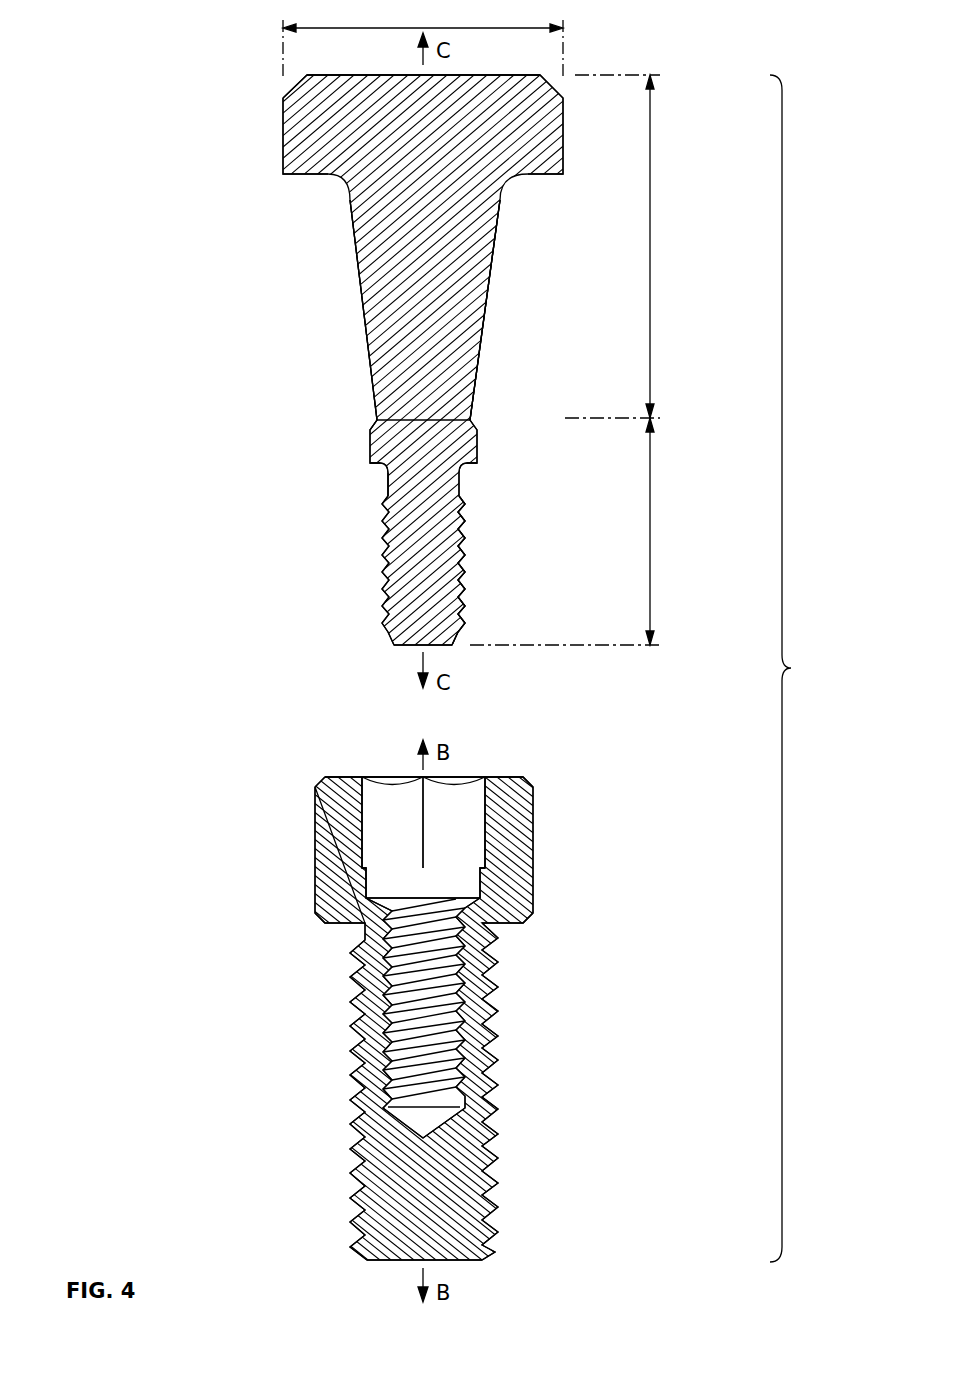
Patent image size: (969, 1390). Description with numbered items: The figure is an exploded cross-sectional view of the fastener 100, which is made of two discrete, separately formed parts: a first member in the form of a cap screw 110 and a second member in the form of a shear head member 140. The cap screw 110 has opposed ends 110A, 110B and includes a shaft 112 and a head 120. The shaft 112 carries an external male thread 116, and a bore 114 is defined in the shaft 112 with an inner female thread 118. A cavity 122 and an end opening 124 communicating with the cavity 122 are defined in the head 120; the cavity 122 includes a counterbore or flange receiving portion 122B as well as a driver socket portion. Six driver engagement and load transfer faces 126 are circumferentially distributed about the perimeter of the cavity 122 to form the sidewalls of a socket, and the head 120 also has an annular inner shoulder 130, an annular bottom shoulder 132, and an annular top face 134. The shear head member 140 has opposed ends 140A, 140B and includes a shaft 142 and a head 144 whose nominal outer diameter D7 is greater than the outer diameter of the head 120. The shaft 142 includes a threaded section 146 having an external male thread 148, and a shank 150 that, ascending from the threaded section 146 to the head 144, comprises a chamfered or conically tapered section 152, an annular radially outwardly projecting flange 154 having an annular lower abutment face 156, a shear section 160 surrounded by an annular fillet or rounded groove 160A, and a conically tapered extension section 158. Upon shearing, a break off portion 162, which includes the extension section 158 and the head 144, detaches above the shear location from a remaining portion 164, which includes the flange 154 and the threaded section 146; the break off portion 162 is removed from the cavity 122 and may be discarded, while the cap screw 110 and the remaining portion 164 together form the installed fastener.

The fastener 100 is at (797, 632).
The cap screw 110 is at (180, 930).
The end of cap screw 110A is at (387, 776).
The end of cap screw 110B is at (400, 1262).
The shaft 112 is at (467, 1158).
The bore 114 is at (433, 1040).
The external thread 116 is at (497, 1205).
The inner female thread 118 is at (438, 1077).
The head 120 is at (517, 877).
The cavity 122 is at (465, 813).
The counterbore or flange receiving portion 122B is at (457, 888).
The end opening 124 is at (465, 755).
The driver engagement and load transfer faces 126 is at (397, 800).
The annular inner shoulder 130 is at (366, 868).
The annular bottom shoulder 132 is at (335, 923).
The annular top face 134 is at (325, 777).
The shear head member 140 is at (268, 246).
The end of shear head member 140A is at (397, 75).
The end of shear head member 140B is at (405, 645).
The shaft 142 is at (523, 362).
The head 144 is at (540, 130).
The threaded section 146 is at (448, 545).
The external thread 148 is at (462, 590).
The shank 150 is at (500, 315).
The chamfered or conically tapered section 152 is at (463, 477).
The annular radially outwardly projecting flange 154 is at (474, 444).
The annular lower abutment face 156 is at (377, 466).
The conically tapered extension section 158 is at (470, 270).
The shear section 160 is at (460, 425).
The annular fillet or rounded groove 160A is at (375, 425).
The break off portion 162 is at (652, 263).
The remaining portion 164 is at (652, 527).
The nominal outer diameter of head D7 is at (475, 28).